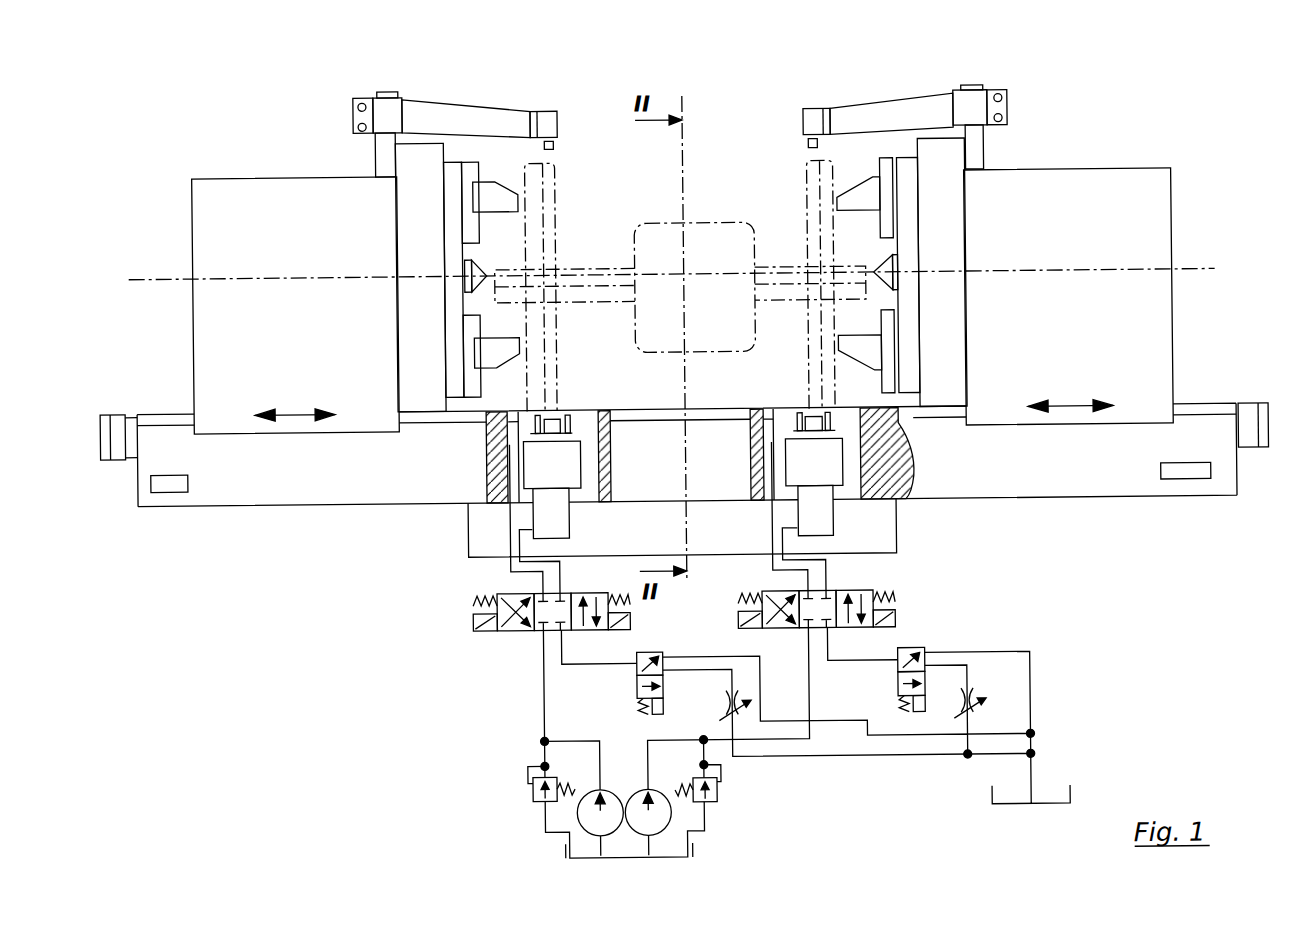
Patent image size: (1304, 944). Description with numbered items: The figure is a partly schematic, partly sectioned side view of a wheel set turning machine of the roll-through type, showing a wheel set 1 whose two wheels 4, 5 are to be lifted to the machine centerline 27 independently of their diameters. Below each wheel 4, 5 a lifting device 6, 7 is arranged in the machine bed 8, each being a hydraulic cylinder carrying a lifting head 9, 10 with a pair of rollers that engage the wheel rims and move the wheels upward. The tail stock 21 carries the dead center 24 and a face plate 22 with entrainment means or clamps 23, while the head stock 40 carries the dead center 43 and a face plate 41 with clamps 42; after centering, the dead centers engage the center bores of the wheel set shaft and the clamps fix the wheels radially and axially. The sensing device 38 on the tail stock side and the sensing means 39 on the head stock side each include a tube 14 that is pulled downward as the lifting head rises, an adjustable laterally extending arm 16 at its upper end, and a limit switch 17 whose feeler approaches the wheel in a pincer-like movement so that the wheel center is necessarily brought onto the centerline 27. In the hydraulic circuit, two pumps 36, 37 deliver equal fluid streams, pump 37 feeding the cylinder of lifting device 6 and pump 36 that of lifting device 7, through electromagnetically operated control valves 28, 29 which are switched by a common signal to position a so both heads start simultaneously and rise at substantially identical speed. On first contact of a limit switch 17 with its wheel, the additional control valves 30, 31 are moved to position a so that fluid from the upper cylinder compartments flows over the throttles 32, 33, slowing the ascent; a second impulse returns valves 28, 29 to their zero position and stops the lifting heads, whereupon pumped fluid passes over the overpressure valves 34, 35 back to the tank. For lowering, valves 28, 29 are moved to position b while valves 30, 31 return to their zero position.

The wheel set 1 is at (794, 294).
The wheel 4 is at (815, 223).
The wheel 5 is at (550, 224).
The lifting device 6 is at (814, 487).
The lifting device 7 is at (552, 490).
The machine bed 8 is at (660, 481).
The lifting head 9 is at (793, 412).
The lifting head 10 is at (573, 411).
The tube 14 is at (978, 148).
The arm 16 is at (878, 117).
The limit switch 17 is at (806, 126).
The tail stock 21 is at (1125, 190).
The face plate 22 is at (907, 182).
The entrainment means or clamps 23 is at (879, 197).
The dead center 24 is at (895, 281).
The centerline 27 is at (1074, 272).
The control valve 28 is at (511, 623).
The control valve 29 is at (858, 590).
The control valve 30 is at (642, 656).
The control valve 31 is at (929, 655).
The throttle 32 is at (720, 708).
The throttle 33 is at (974, 686).
The overpressure valve 34 is at (716, 793).
The overpressure valve 35 is at (528, 791).
The pump 36 is at (589, 813).
The pump 37 is at (651, 814).
The sensing device 38 is at (1010, 108).
The sensing means 39 is at (355, 109).
The head stock 40 is at (260, 201).
The face plate 41 is at (457, 183).
The entrainment means or clamps 42 is at (482, 193).
The dead center 43 is at (471, 281).